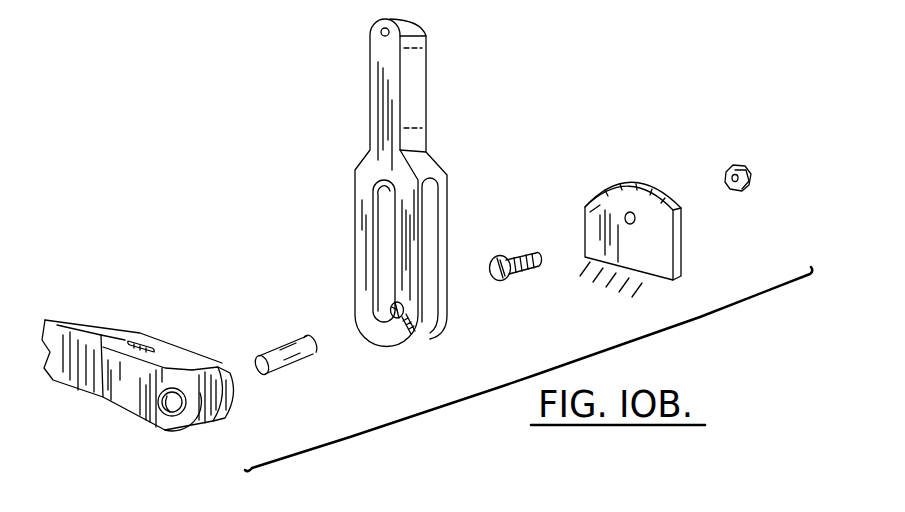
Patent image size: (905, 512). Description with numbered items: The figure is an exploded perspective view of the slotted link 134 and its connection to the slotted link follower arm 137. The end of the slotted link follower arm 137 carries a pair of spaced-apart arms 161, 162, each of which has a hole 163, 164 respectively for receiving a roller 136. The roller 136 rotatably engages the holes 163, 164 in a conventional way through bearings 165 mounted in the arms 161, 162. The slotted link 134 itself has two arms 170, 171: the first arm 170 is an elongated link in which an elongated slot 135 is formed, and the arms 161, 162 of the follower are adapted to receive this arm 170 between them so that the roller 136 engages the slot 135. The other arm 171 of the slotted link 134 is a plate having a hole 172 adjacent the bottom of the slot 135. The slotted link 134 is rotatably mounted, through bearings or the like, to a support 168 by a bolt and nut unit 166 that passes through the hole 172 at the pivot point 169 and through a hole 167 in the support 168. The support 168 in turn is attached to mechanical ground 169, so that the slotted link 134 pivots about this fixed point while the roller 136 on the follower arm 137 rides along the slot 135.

The slotted link 134 is at (428, 100).
The elongated slot 135 is at (388, 230).
The roller 136 is at (303, 358).
The slotted link follower arm 137 is at (92, 322).
The arm 161 is at (157, 352).
The arm 162 is at (193, 352).
The hole 163 is at (174, 417).
The hole 164 is at (232, 378).
The bearings 165 is at (163, 378).
The bolt and nut unit 166 is at (500, 255).
The hole 167 is at (636, 220).
The support 168 is at (650, 186).
The pivot point 169 is at (627, 213).
The first arm 170 is at (408, 338).
The other arm 171 is at (437, 329).
The hole 172 is at (392, 307).